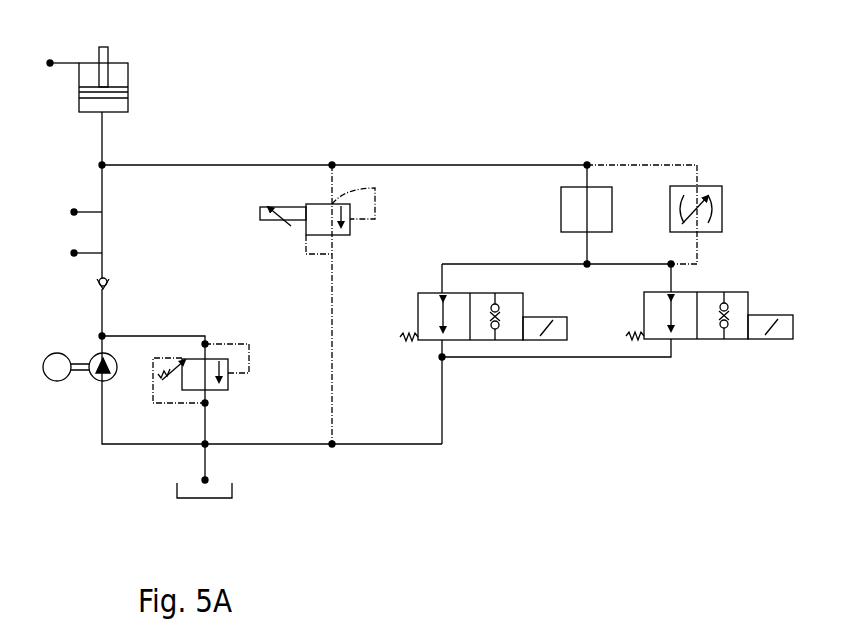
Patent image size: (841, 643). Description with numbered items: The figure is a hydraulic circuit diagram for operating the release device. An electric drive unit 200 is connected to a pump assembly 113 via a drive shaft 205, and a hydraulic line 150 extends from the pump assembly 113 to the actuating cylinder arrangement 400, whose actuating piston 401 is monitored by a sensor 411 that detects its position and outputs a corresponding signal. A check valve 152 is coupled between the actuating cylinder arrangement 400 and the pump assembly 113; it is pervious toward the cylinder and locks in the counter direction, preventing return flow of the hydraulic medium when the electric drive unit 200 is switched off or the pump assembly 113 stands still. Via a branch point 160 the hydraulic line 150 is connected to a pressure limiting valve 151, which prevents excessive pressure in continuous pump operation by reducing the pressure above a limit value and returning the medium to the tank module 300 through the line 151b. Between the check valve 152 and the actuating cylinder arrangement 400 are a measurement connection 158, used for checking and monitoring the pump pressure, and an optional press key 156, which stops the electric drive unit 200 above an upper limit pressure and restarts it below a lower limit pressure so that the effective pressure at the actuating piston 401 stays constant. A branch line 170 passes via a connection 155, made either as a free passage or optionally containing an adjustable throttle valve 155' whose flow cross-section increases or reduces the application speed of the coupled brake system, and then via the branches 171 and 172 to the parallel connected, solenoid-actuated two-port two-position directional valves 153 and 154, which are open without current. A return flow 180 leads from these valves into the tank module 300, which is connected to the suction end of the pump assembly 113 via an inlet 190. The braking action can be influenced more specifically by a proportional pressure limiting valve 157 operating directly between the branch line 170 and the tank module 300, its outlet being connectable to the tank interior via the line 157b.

The actuating cylinder arrangement 400 is at (78, 78).
The actuating piston 401 is at (108, 58).
The sensor 411 is at (52, 60).
The measurement connection 158 is at (74, 208).
The press key 156 is at (74, 249).
The hydraulic line 150 is at (96, 278).
The check valve 152 is at (95, 291).
The branch line 170 is at (445, 165).
The inlet 190 is at (140, 445).
The return flow 180 is at (420, 448).
The electric drive unit 200 is at (42, 362).
The drive shaft 205 is at (82, 363).
The pump assembly 113 is at (92, 378).
The branch point 160 is at (150, 336).
The pressure limiting valve 151 is at (228, 385).
The line 151b is at (210, 425).
The tank module 300 is at (233, 492).
The proportional pressure limiting valve 157 is at (306, 205).
The line 157b is at (330, 340).
The connection 155 is at (557, 214).
The throttle valve 155' is at (688, 214).
The branch 171 is at (523, 264).
The branch 172 is at (660, 264).
The 2/2-way valve 153 is at (418, 300).
The 2/2-way valve 154 is at (720, 292).